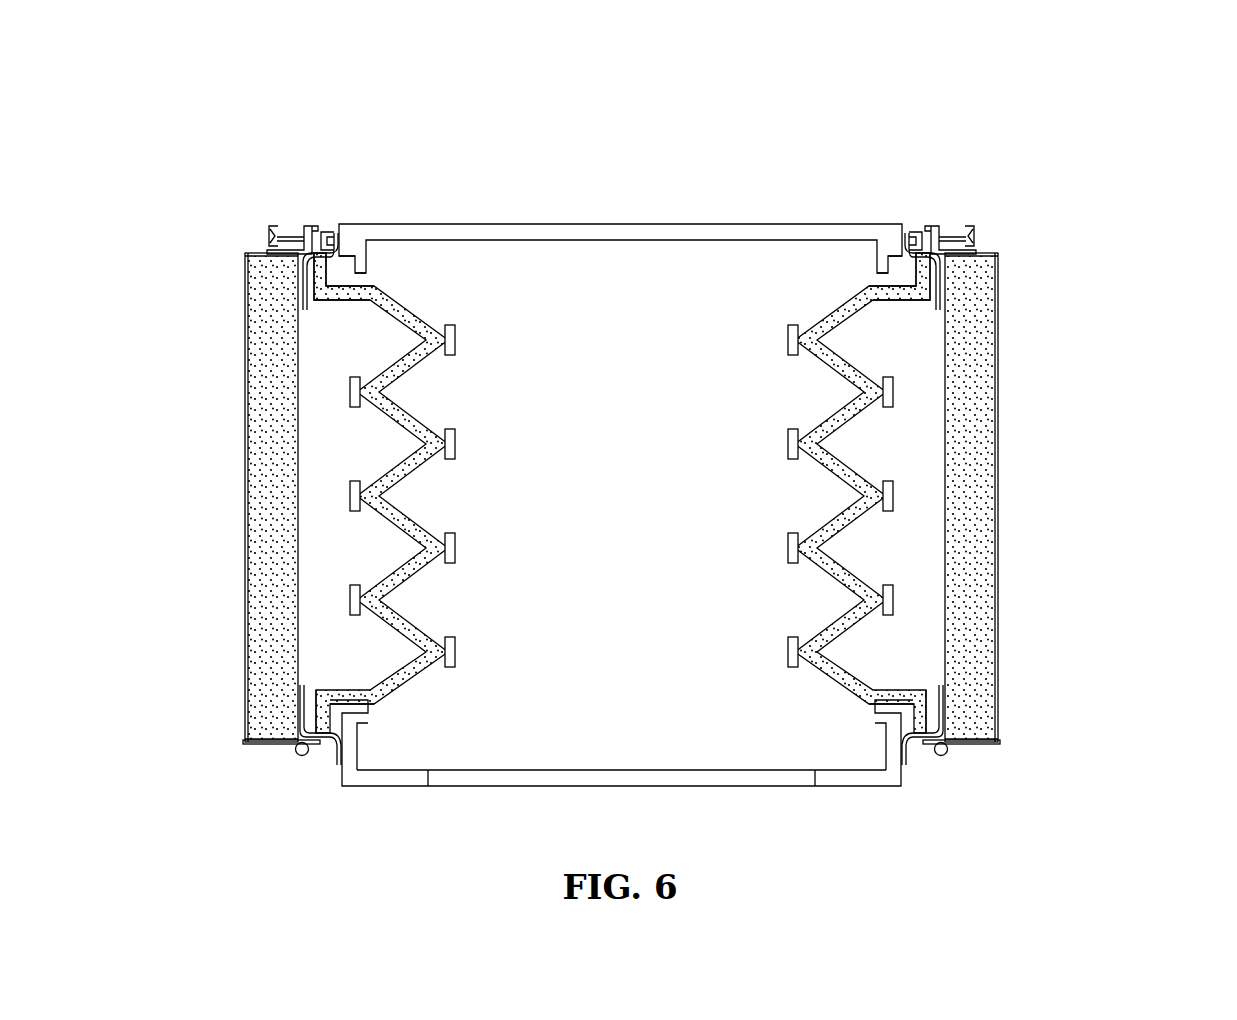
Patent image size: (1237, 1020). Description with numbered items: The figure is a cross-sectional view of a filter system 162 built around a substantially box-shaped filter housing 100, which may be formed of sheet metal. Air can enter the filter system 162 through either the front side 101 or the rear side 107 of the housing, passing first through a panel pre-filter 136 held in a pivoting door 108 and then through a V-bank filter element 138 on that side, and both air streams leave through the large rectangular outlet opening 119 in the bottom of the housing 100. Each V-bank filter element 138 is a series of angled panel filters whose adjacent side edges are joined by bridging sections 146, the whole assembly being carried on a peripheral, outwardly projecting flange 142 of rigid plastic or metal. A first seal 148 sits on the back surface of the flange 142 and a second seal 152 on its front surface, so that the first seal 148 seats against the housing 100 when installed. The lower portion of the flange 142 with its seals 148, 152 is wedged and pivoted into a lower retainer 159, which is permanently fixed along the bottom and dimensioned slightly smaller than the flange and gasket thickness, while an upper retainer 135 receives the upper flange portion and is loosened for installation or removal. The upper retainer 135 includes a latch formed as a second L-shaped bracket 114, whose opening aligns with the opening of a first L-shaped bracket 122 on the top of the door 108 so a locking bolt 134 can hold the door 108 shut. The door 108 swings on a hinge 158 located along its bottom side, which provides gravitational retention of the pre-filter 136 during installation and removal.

The filter housing 100 is at (470, 160).
The filter system 162 is at (1110, 93).
The front side 101 is at (1017, 706).
The rear side 107 is at (226, 706).
The pivoting door 108 is at (243, 681).
The second L-shaped bracket 114 is at (310, 226).
The outlet opening 119 is at (716, 778).
The first L-shaped bracket 122 is at (275, 226).
The locking bolt 134 is at (268, 235).
The upper retainer 135 is at (334, 232).
The panel pre-filter 136 is at (250, 468).
The V-bank filter element 138 is at (483, 335).
The flange 142 is at (345, 300).
The bridging section 146 is at (458, 547).
The first seal 148 is at (361, 278).
The second seal 152 is at (305, 300).
The hinge 158 is at (297, 755).
The lower retainer 159 is at (332, 752).